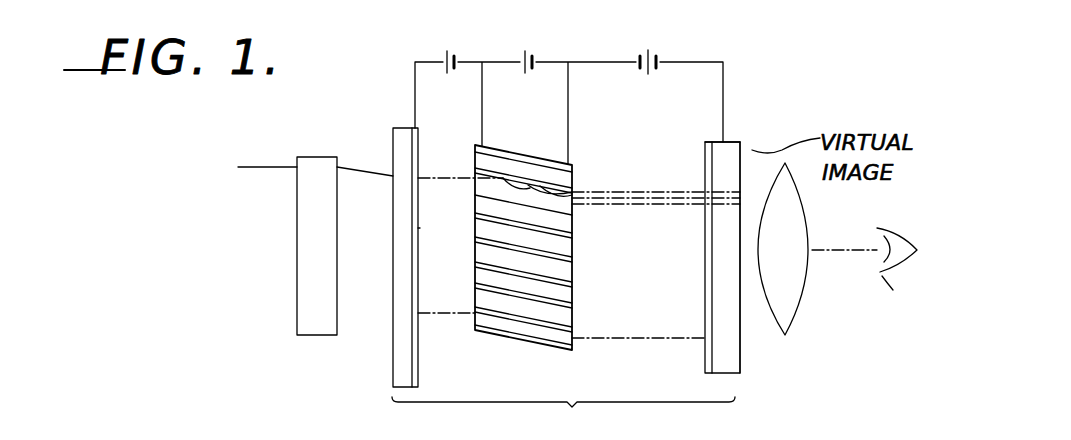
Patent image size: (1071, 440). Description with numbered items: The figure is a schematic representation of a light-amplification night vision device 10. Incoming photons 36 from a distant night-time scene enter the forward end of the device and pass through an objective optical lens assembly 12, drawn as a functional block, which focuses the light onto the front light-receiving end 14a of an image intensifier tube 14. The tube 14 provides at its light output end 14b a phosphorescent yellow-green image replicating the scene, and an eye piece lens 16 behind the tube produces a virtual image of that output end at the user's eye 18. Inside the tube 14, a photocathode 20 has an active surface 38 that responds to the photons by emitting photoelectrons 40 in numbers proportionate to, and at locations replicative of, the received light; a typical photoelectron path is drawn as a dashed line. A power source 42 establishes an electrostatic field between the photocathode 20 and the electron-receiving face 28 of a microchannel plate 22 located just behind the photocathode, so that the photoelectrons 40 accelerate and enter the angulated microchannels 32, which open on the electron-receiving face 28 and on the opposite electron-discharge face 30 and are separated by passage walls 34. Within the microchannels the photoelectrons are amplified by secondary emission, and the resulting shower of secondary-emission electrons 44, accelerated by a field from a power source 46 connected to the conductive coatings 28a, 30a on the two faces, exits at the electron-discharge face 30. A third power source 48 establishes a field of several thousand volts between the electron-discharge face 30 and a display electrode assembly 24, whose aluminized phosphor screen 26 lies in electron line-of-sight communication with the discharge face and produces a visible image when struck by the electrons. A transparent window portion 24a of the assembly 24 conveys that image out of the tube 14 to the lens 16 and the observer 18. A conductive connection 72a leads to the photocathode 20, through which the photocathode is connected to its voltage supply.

The night vision device 10 is at (790, 88).
The objective optical lens assembly 12 is at (297, 322).
The image intensifier tube 14 is at (563, 418).
The front light-receiving end 14a is at (393, 372).
The light output end 14b is at (745, 142).
The eye piece lens 16 is at (790, 318).
The user's eye 18 is at (878, 275).
The photocathode 20 is at (418, 362).
The microchannel plate 22 is at (509, 143).
The display electrode assembly 24 is at (740, 365).
The transparent window portion 24a is at (730, 333).
The phosphor screen 26 is at (703, 363).
The electron-receiving face 28 is at (478, 273).
The conductive coating on electron-receiving face 28a is at (475, 205).
The electron-discharge face 30 is at (572, 317).
The conductive coating on electron-discharge face 30a is at (572, 222).
The angulated microchannels 32 is at (567, 245).
The passage walls 34 is at (557, 280).
The photons 36 is at (268, 166).
The active surface 38 is at (418, 228).
The photoelectrons 40 is at (462, 178).
The power source 42 is at (448, 50).
The secondary-emission electrons 44 is at (627, 193).
The power source 46 is at (526, 50).
The power source 48 is at (656, 50).
The conductive connection 72a is at (415, 95).